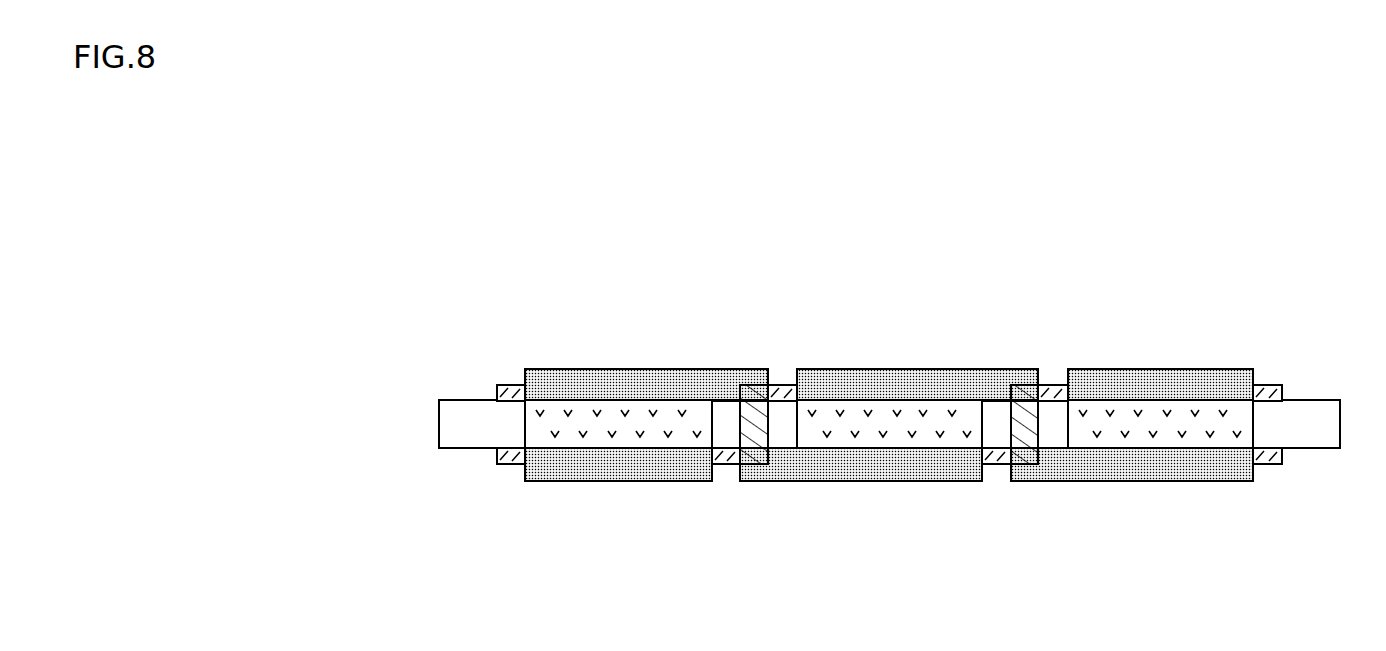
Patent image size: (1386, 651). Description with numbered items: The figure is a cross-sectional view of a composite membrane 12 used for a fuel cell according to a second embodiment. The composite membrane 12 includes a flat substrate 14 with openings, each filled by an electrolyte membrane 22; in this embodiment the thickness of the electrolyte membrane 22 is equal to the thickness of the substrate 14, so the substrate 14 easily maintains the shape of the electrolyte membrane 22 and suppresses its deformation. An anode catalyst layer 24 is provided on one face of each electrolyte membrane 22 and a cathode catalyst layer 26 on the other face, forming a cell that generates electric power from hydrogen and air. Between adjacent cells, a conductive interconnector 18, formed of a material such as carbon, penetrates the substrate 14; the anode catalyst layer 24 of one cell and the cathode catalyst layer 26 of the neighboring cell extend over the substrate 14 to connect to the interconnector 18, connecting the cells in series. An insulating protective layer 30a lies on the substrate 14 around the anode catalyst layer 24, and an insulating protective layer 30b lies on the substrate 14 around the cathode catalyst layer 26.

The composite membrane 12 is at (878, 611).
The substrate 14 is at (472, 412).
The interconnector 18 is at (755, 465).
The electrolyte membrane 22 is at (598, 437).
The anode catalyst layer 24 is at (648, 368).
The cathode catalyst layer 26 is at (617, 472).
The insulating protective layer 30a is at (512, 385).
The insulating protective layer 30b is at (513, 466).